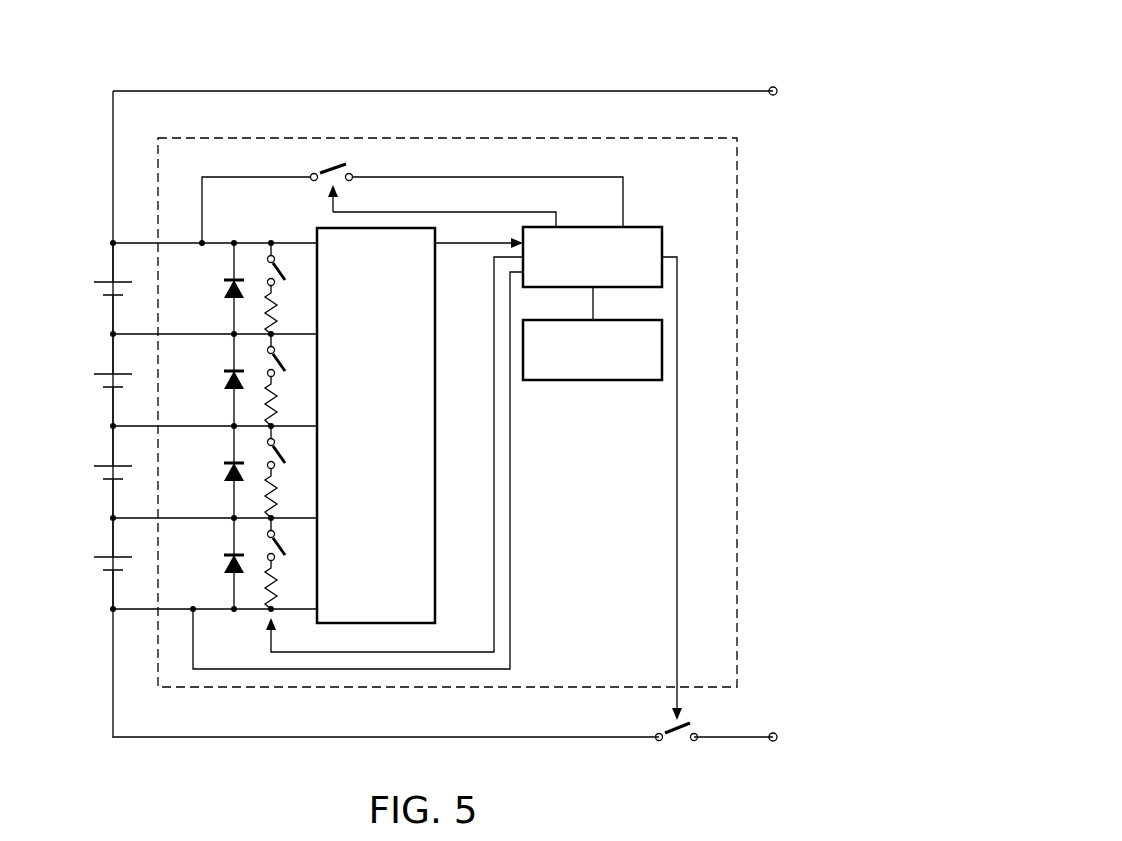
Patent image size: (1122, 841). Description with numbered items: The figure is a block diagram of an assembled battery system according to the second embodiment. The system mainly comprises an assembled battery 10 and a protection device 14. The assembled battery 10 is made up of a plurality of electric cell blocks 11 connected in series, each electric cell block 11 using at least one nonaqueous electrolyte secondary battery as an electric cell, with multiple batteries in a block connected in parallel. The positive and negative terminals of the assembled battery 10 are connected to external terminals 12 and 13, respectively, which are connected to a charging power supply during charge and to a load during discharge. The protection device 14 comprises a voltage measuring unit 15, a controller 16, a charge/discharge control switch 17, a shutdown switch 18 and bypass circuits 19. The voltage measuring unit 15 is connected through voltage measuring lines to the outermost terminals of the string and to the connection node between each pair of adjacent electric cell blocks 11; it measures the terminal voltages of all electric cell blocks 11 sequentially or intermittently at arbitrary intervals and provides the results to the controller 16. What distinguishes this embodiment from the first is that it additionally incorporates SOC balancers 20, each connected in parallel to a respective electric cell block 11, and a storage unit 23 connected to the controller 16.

The assembled battery 10 is at (76, 406).
The electric cell block 11 is at (101, 268).
The external terminal 12 is at (778, 91).
The external terminal 13 is at (778, 737).
The protection device 14 is at (738, 180).
The voltage measuring unit 15 is at (436, 350).
The controller 16 is at (664, 240).
The charge/discharge control switch 17 is at (664, 726).
The shutdown switch 18 is at (326, 165).
The bypass circuit 19 is at (222, 291).
The SOC balancer 20 is at (292, 292).
The storage unit 23 is at (593, 381).